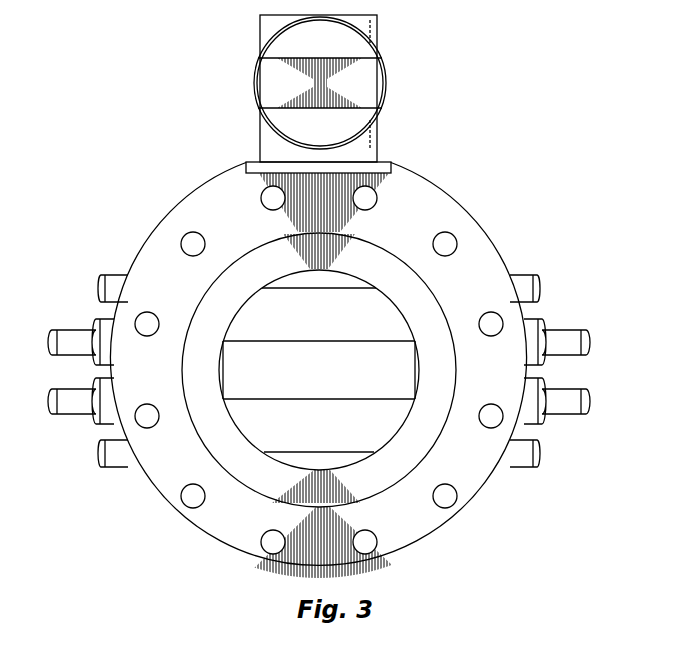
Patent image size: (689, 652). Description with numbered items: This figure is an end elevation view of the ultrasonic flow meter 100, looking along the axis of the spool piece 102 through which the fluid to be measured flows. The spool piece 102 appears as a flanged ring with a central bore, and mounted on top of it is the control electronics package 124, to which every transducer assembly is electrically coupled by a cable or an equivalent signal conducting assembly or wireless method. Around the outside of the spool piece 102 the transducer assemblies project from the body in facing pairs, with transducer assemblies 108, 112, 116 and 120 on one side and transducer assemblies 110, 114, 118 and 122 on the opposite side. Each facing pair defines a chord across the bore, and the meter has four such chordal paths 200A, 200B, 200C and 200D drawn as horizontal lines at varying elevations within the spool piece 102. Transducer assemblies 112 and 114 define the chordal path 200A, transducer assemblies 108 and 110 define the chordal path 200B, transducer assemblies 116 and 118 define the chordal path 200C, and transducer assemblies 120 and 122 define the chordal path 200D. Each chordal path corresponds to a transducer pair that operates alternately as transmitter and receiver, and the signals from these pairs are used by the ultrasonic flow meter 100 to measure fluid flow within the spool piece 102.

The ultrasonic flow meter 100 is at (458, 36).
The spool piece 102 is at (181, 213).
The transducer assembly 108 is at (99, 290).
The transducer assembly 110 is at (540, 290).
The transducer assembly 112 is at (68, 328).
The transducer assembly 114 is at (562, 328).
The transducer assembly 116 is at (70, 416).
The transducer assembly 118 is at (566, 416).
The transducer assembly 120 is at (97, 456).
The transducer assembly 122 is at (543, 456).
The control electronics package 124 is at (256, 84).
The chordal path 200A is at (311, 344).
The chordal path 200B is at (332, 291).
The chordal path 200C is at (331, 402).
The chordal path 200D is at (307, 449).